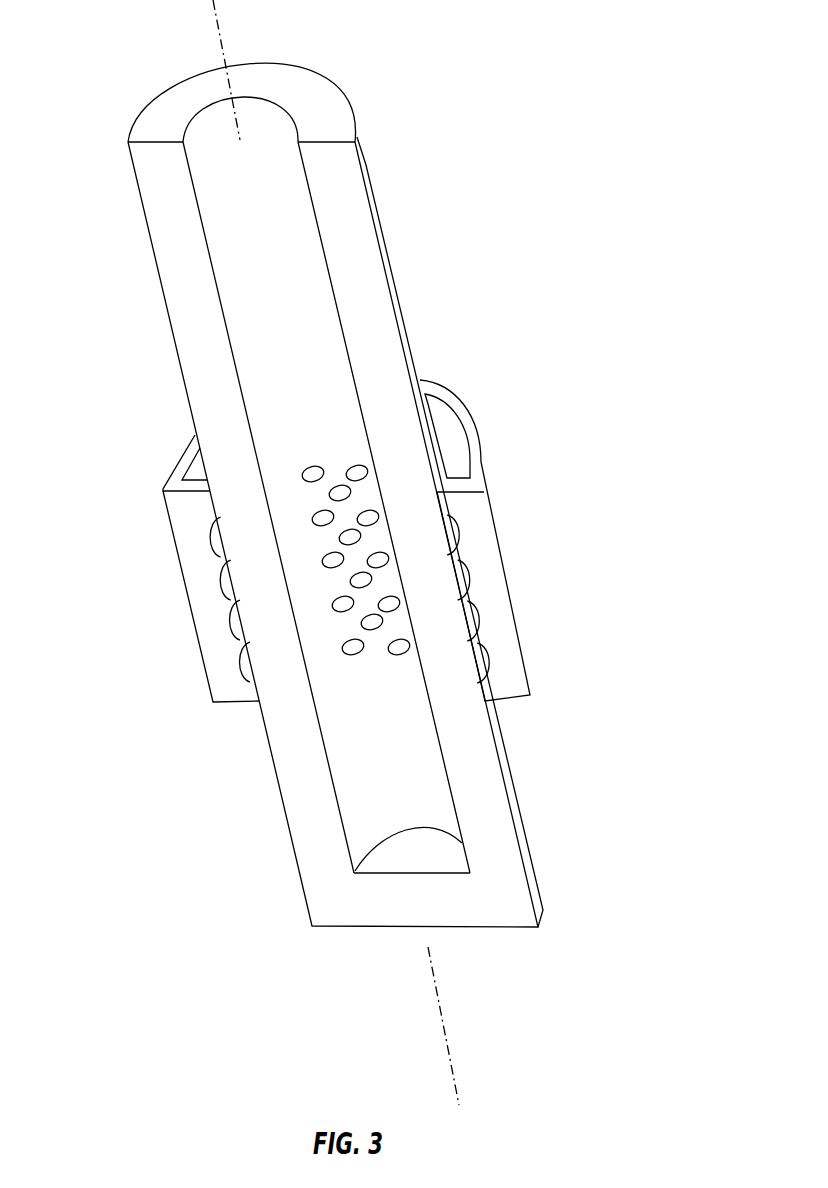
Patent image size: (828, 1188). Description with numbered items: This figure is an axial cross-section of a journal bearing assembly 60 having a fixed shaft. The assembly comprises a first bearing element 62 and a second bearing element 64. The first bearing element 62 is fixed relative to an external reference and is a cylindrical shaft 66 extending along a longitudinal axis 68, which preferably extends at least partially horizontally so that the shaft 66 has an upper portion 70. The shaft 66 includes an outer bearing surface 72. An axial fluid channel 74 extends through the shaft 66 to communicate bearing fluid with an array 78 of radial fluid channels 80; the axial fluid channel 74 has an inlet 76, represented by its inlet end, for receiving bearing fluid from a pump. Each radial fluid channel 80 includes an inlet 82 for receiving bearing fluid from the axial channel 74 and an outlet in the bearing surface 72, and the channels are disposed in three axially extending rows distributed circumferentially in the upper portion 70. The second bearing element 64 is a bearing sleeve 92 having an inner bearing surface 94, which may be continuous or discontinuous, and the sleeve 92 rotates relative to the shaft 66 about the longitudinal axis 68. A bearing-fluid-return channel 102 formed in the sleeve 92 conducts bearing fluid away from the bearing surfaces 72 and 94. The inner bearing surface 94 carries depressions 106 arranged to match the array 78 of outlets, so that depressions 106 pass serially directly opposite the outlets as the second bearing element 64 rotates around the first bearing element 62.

The journal bearing assembly 60 is at (601, 222).
The first bearing element 62 is at (380, 181).
The second bearing element 64 is at (535, 613).
The cylindrical shaft 66 is at (401, 320).
The longitudinal axis 68 is at (221, 28).
The upper portion 70 is at (290, 428).
The outer bearing surface 72 is at (390, 262).
The axial fluid channel 74 is at (256, 300).
The inlet 76 is at (212, 122).
The array 78 is at (381, 690).
The radial fluid channels 80 is at (313, 470).
The inlet 82 is at (343, 603).
The bearing sleeve 92 is at (473, 444).
The inner bearing surface 94 is at (437, 513).
The bearing-fluid-return channel 102 is at (448, 428).
The depressions 106 is at (246, 663).